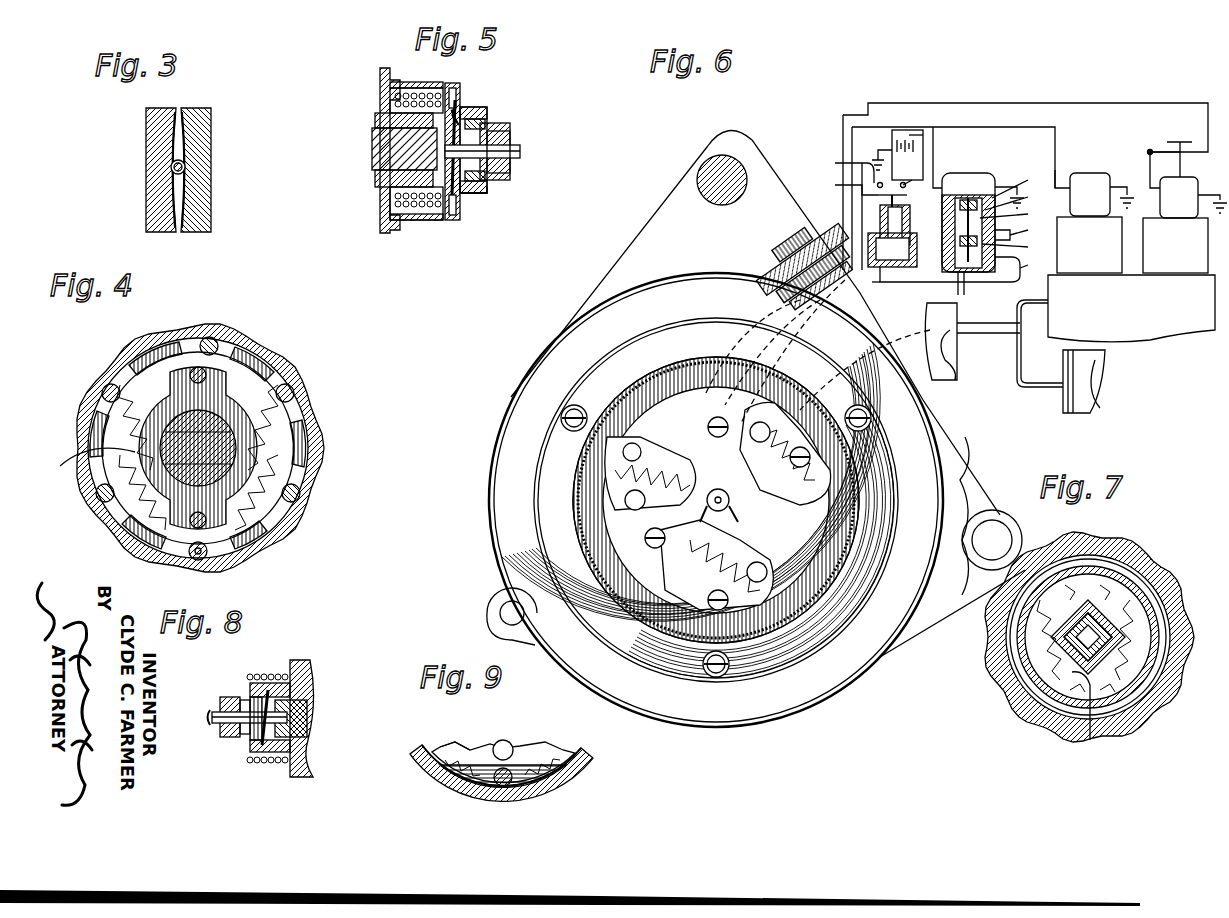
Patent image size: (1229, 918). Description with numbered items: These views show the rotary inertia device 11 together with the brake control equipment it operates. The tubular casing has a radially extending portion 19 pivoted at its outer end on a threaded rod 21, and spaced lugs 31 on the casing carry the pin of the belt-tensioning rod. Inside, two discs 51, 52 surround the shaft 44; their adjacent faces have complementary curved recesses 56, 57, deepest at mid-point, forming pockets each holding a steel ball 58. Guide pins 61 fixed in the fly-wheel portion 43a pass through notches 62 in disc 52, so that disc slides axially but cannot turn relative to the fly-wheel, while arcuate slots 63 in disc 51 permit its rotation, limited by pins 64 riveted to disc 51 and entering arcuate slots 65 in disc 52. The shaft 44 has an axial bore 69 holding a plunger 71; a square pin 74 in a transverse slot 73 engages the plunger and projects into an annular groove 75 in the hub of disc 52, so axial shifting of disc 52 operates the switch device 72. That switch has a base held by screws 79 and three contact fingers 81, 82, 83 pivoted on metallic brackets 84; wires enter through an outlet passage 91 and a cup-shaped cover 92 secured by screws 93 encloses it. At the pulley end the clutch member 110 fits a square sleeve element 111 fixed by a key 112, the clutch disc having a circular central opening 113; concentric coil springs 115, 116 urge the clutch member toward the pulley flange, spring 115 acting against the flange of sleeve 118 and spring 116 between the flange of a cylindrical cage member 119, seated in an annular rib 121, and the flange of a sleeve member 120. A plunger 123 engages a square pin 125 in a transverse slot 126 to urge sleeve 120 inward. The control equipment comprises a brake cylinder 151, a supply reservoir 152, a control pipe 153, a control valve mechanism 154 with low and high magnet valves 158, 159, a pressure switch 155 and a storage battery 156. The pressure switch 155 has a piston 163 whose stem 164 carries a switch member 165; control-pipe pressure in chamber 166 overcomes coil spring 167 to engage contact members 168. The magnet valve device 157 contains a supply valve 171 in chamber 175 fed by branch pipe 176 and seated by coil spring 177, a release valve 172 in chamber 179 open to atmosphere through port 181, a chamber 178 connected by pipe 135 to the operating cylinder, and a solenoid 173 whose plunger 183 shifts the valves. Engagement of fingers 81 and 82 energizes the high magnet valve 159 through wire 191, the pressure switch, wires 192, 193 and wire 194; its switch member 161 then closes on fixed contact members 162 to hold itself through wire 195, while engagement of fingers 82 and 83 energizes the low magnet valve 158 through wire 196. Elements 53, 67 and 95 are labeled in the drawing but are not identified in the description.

In FIG. 6, the rotary inertia device 11 is at (488, 415).
In FIG. 6, the radially extending portion 19 is at (615, 245).
In FIG. 6, the threaded rod 21 is at (705, 165).
In FIG. 6, the spaced lugs 31 is at (975, 465).
In FIG. 4, the portion of fly-wheel 43a is at (290, 352).
In FIG. 9, the portion of fly-wheel 43a is at (428, 770).
In FIG. 5, the shaft 44 is at (380, 148).
In FIG. 4, the shaft 44 is at (216, 440).
In FIG. 7, the shaft 44 is at (1118, 650).
In FIG. 8, the shaft 44 is at (300, 712).
In FIG. 3, the disc 51 is at (205, 190).
In FIG. 4, the disc 51 is at (236, 462).
In FIG. 9, the disc 51 is at (478, 748).
In FIG. 3, the disc 52 is at (146, 188).
In FIG. 4, the disc 52 is at (305, 408).
In FIG. 8, the disc 52 is at (308, 688).
In FIG. 9, the disc 52 is at (450, 748).
In FIG. 4, the clearance 53 is at (85, 463).
In FIG. 3, the recesses 56 is at (186, 143).
In FIG. 3, the recesses 57 is at (172, 143).
In FIG. 4, the recesses 57 is at (260, 350).
In FIG. 3, the steel ball 58 is at (170, 167).
In FIG. 4, the steel ball 58 is at (209, 337).
In FIG. 4, the guide pins 61 is at (103, 390).
In FIG. 9, the guide pins 61 is at (545, 797).
In FIG. 4, the notches 62 is at (196, 558).
In FIG. 9, the notches 62 is at (495, 785).
In FIG. 9, the arcuate slots 63 is at (545, 750).
In FIG. 4, the pins 64 is at (206, 380).
In FIG. 9, the pins 64 is at (515, 731).
In FIG. 4, the arcuate slots 65 is at (160, 375).
In FIG. 8, the coil spring 67 is at (252, 764).
In FIG. 8, the axial bore 69 is at (212, 728).
In FIG. 8, the plunger 71 is at (212, 722).
In FIG. 6, the switch device 72 is at (607, 541).
In FIG. 8, the transverse slot 73 is at (222, 698).
In FIG. 8, the square pin 74 is at (282, 683).
In FIG. 8, the annular groove 75 is at (252, 750).
In FIG. 6, the screws 79 is at (708, 427).
In FIG. 6, the contact finger 81 is at (707, 512).
In FIG. 6, the contact finger 82 is at (731, 512).
In FIG. 6, the contact finger 83 is at (718, 489).
In FIG. 6, the metallic brackets 84 is at (640, 450).
In FIG. 6, the outlet passage 91 is at (830, 250).
In FIG. 6, the cup-shaped cover 92 is at (573, 497).
In FIG. 6, the screws 93 is at (578, 408).
In FIG. 7, the housing 95 is at (1105, 545).
In FIG. 5, the clutch member 110 is at (372, 210).
In FIG. 7, the clutch member 110 is at (1130, 585).
In FIG. 5, the sleeve element 111 is at (375, 178).
In FIG. 7, the sleeve element 111 is at (1112, 640).
In FIG. 7, the key 112 is at (1095, 635).
In FIG. 7, the circular central opening 113 is at (1090, 740).
In FIG. 5, the coil spring 115 is at (390, 104).
In FIG. 5, the coil spring 116 is at (412, 88).
In FIG. 5, the sleeve 118 is at (500, 178).
In FIG. 5, the cylindrical cage member 119 is at (452, 222).
In FIG. 5, the sleeve member 120 is at (492, 192).
In FIG. 5, the annular rib 121 is at (400, 222).
In FIG. 5, the plunger 123 is at (520, 151).
In FIG. 5, the pin 125 is at (490, 118).
In FIG. 5, the transverse slot 126 is at (462, 114).
In FIG. 6, the pipe 135 is at (1034, 229).
In FIG. 6, the brake cylinder 151 is at (1115, 366).
In FIG. 6, the supply reservoir 152 is at (967, 365).
In FIG. 6, the control pipe 153 is at (955, 288).
In FIG. 6, the control valve mechanism 154 is at (1190, 342).
In FIG. 6, the pressure switch 155 is at (910, 212).
In FIG. 6, the storage battery 156 is at (900, 128).
In FIG. 6, the magnet valve device 157 is at (973, 140).
In FIG. 6, the low magnet valve device 158 is at (1085, 172).
In FIG. 6, the high magnet valve 159 is at (1210, 175).
In FIG. 6, the switch member 161 is at (1182, 141).
In FIG. 6, the fixed contact members 162 is at (1164, 169).
In FIG. 6, the piston 163 is at (912, 250).
In FIG. 6, the stem 164 is at (908, 196).
In FIG. 6, the switch member 165 is at (835, 185).
In FIG. 6, the chamber 166 is at (880, 284).
In FIG. 6, the coil spring 167 is at (910, 230).
In FIG. 6, the contact members 168 is at (897, 155).
In FIG. 6, the supply valve 171 is at (1020, 246).
In FIG. 6, the release valve 172 is at (1022, 198).
In FIG. 6, the electromagnet winding 173 is at (995, 172).
In FIG. 6, the chamber 175 is at (980, 275).
In FIG. 6, the branch pipe 176 is at (1039, 264).
In FIG. 6, the coil spring 177 is at (962, 275).
In FIG. 6, the chamber 178 is at (1019, 213).
In FIG. 6, the chamber 179 is at (1025, 184).
In FIG. 6, the port 181 is at (955, 175).
In FIG. 6, the plunger 183 is at (1015, 162).
In FIG. 6, the wire 191 is at (915, 130).
In FIG. 6, the wire 192 is at (835, 163).
In FIG. 6, the wire 193 is at (852, 143).
In FIG. 6, the wire 194 is at (843, 118).
In FIG. 6, the wire 195 is at (1150, 151).
In FIG. 6, the wire 196 is at (1056, 140).